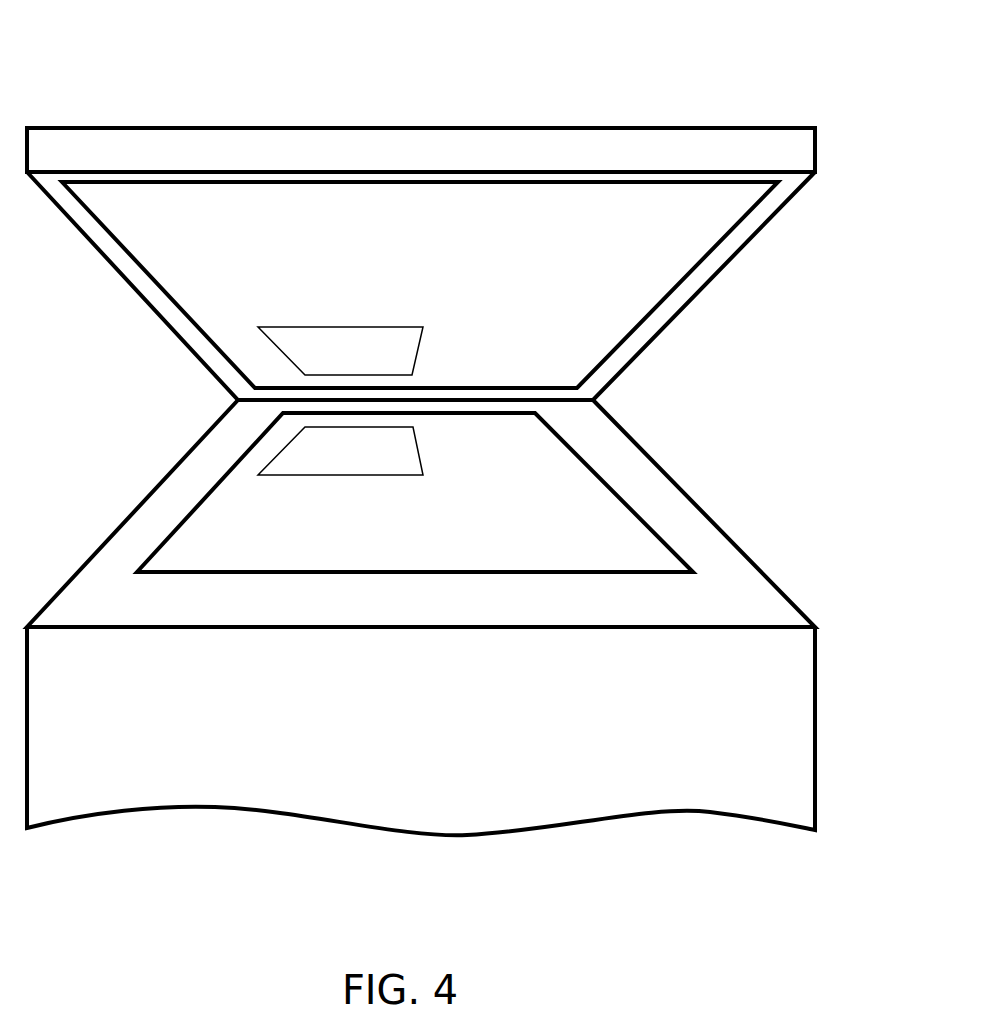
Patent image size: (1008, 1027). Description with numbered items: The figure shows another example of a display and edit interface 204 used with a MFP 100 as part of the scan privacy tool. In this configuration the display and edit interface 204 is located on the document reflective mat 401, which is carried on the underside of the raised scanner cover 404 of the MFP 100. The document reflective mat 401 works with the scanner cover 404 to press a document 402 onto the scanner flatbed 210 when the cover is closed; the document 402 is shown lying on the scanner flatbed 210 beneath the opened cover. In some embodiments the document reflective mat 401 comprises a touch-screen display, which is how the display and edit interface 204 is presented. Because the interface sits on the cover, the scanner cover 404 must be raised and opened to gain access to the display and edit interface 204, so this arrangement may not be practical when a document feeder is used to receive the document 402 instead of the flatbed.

The MFP 100 is at (652, 455).
The display and edit interface 204 is at (335, 327).
The scanner flatbed 210 is at (602, 537).
The document reflective mat 401 is at (535, 240).
The document 402 is at (320, 475).
The scanner cover 404 is at (757, 218).